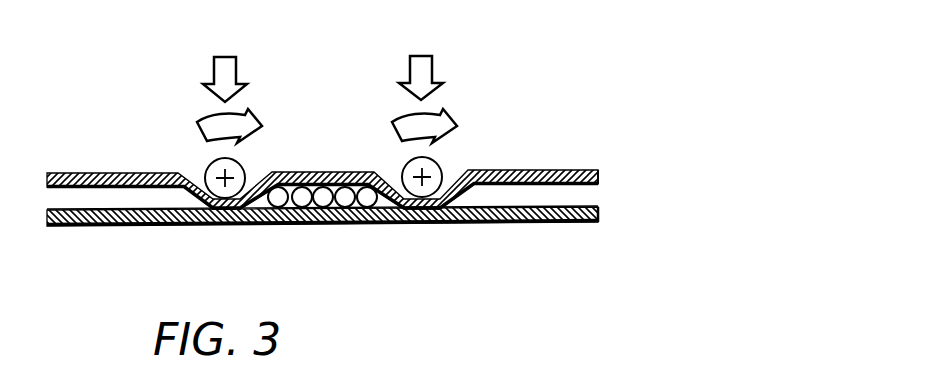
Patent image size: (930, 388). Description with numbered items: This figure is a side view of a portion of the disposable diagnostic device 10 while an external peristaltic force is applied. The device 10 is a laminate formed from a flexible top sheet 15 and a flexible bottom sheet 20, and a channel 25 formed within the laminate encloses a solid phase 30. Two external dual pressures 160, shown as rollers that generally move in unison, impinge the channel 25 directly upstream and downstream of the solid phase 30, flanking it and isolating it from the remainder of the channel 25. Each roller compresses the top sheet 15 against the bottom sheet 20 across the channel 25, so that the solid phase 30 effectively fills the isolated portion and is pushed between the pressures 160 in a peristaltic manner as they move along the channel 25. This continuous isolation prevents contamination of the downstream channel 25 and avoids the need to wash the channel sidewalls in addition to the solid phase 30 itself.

The disposable diagnostic device 10 is at (140, 62).
The top sheet 15 is at (557, 170).
The bottom sheet 20 is at (563, 222).
The channel 25 is at (114, 208).
The solid phase 30 is at (344, 198).
The external dual pressures 160 is at (240, 163).